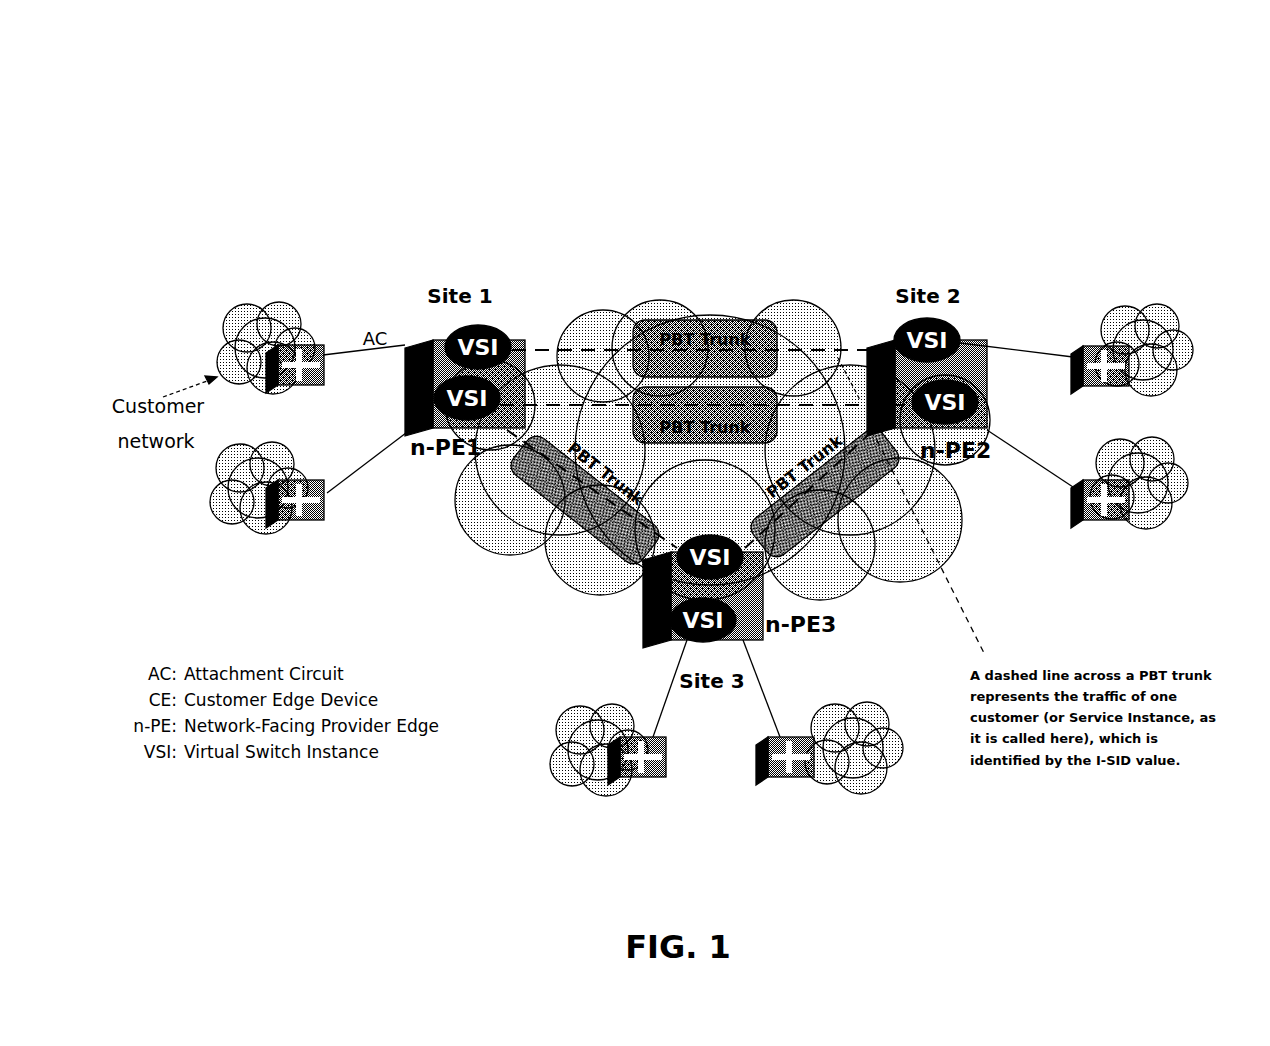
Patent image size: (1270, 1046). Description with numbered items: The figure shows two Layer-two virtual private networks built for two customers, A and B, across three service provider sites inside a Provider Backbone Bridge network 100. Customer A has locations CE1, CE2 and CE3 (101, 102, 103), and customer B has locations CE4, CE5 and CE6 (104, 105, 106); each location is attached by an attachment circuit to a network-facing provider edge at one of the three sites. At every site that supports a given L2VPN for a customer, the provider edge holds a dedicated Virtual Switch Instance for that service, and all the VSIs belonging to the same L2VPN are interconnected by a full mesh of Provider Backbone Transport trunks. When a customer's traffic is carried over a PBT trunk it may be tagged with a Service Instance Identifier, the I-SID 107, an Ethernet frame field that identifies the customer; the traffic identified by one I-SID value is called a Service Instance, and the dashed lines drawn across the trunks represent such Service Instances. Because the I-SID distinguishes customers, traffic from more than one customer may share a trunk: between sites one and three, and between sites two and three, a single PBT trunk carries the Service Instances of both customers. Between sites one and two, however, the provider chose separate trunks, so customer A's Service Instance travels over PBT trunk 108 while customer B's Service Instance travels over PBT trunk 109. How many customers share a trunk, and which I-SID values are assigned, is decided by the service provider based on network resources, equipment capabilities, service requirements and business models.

The Provider Backbone Bridge (PBB) network 100 is at (633, 300).
The customer A location CE1 101 is at (320, 345).
The customer A location CE2 102 is at (1073, 350).
The customer A location CE3 103 is at (785, 737).
The customer B location CE4 104 is at (322, 507).
The customer B location CE5 105 is at (648, 737).
The customer B location CE6 106 is at (1073, 500).
The Service Instance Identifier (I-SID) 107 is at (793, 314).
The PBT trunk 108 is at (703, 328).
The PBT trunk 109 is at (706, 384).